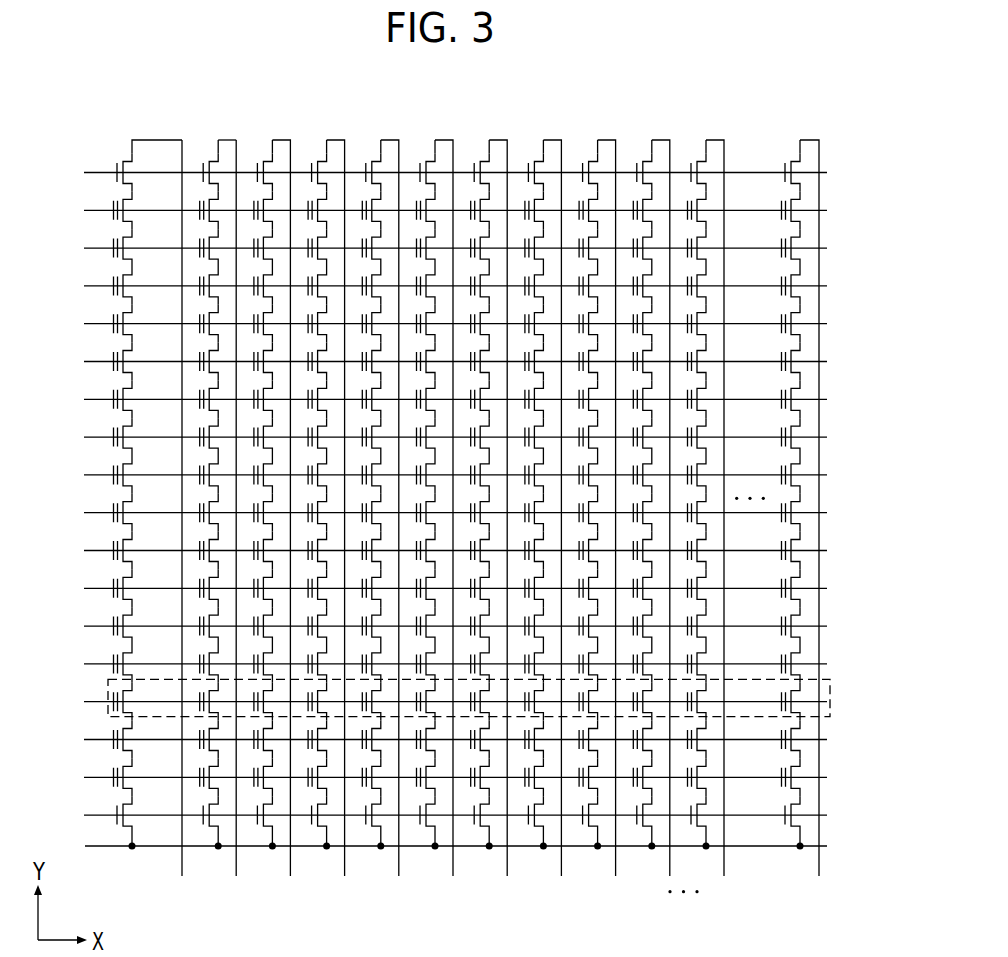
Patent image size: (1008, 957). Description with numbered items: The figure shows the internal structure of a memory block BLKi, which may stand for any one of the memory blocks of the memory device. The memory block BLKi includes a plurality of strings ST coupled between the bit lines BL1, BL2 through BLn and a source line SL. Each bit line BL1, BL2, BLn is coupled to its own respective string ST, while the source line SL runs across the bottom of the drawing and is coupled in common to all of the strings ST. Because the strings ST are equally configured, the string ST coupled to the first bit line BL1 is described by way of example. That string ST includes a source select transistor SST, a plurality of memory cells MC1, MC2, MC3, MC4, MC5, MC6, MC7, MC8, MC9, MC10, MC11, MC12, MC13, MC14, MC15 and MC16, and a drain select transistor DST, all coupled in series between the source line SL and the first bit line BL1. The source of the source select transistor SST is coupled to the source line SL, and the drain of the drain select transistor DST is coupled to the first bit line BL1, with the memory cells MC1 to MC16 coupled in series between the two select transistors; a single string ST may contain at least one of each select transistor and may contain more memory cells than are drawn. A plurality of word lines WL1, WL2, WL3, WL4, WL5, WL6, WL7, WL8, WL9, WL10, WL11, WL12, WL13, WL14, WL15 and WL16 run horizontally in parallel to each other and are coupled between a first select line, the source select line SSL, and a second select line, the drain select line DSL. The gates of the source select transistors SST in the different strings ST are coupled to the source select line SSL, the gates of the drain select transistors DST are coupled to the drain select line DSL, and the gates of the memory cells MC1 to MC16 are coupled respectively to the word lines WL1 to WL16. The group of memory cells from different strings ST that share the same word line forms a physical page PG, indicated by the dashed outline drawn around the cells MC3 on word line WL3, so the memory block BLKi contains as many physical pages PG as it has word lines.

The memory block BLKi is at (755, 70).
The string ST is at (174, 136).
The drain select line DSL is at (436, 172).
The source select line SSL is at (436, 815).
The source line SL is at (441, 846).
The word line WL1 is at (435, 777).
The word line WL2 is at (435, 739).
The word line WL3 is at (435, 701).
The word line WL4 is at (435, 664).
The word line WL5 is at (435, 626).
The word line WL6 is at (435, 588).
The word line WL7 is at (435, 550).
The word line WL8 is at (435, 512).
The word line WL9 is at (435, 475).
The word line WL10 is at (431, 437).
The word line WL11 is at (431, 399).
The word line WL12 is at (431, 361).
The word line WL13 is at (431, 324).
The word line WL14 is at (431, 286).
The word line WL15 is at (431, 248).
The word line WL16 is at (431, 210).
The drain select transistor DST is at (144, 167).
The source select transistor SST is at (144, 810).
The memory cell MC1 is at (143, 772).
The memory cell MC2 is at (143, 734).
The memory cell MC3 is at (143, 697).
The memory cell MC4 is at (143, 659).
The memory cell MC5 is at (143, 621).
The memory cell MC6 is at (143, 583).
The memory cell MC7 is at (143, 545).
The memory cell MC8 is at (143, 508).
The memory cell MC9 is at (143, 470).
The memory cell MC10 is at (147, 432).
The memory cell MC11 is at (147, 394).
The memory cell MC12 is at (147, 356).
The memory cell MC13 is at (147, 319).
The memory cell MC14 is at (147, 281).
The memory cell MC15 is at (147, 243).
The memory cell MC16 is at (147, 205).
The first bit line BL1 is at (182, 524).
The bit line BL2 is at (237, 524).
The bit line BLn is at (817, 524).
The physical page PG is at (832, 693).